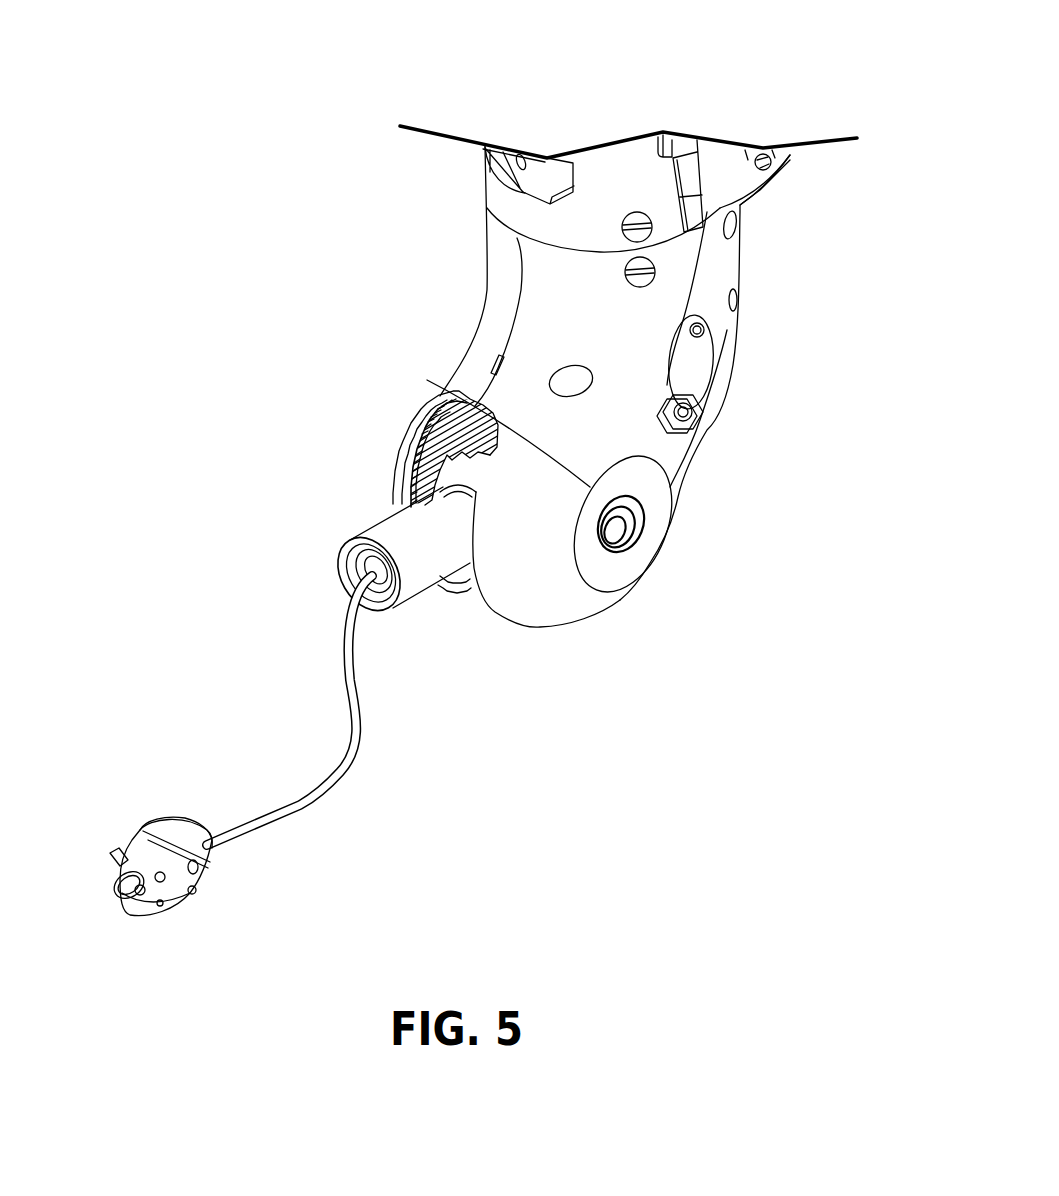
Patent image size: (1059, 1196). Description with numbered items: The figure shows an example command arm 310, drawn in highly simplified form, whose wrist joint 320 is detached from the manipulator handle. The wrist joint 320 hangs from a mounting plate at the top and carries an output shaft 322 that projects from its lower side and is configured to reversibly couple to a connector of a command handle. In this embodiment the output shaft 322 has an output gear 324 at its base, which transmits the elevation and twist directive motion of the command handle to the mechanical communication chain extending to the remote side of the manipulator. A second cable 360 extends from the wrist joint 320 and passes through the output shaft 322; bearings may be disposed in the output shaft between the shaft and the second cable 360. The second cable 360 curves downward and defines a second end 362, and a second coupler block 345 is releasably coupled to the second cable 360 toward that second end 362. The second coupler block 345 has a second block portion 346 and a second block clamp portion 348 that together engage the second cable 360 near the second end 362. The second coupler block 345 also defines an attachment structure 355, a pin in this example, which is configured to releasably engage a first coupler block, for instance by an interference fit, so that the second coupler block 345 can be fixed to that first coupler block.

The command arm 310 is at (628, 80).
The wrist joint 320 is at (757, 419).
The output shaft 322 is at (438, 548).
The output gear 324 is at (428, 381).
The second cable 360 is at (372, 572).
The second coupler block 345 is at (143, 818).
The second block clamp portion 348 is at (172, 820).
The second block portion 346 is at (173, 905).
The attachment structure 355 is at (115, 862).
The second end 362 is at (107, 887).